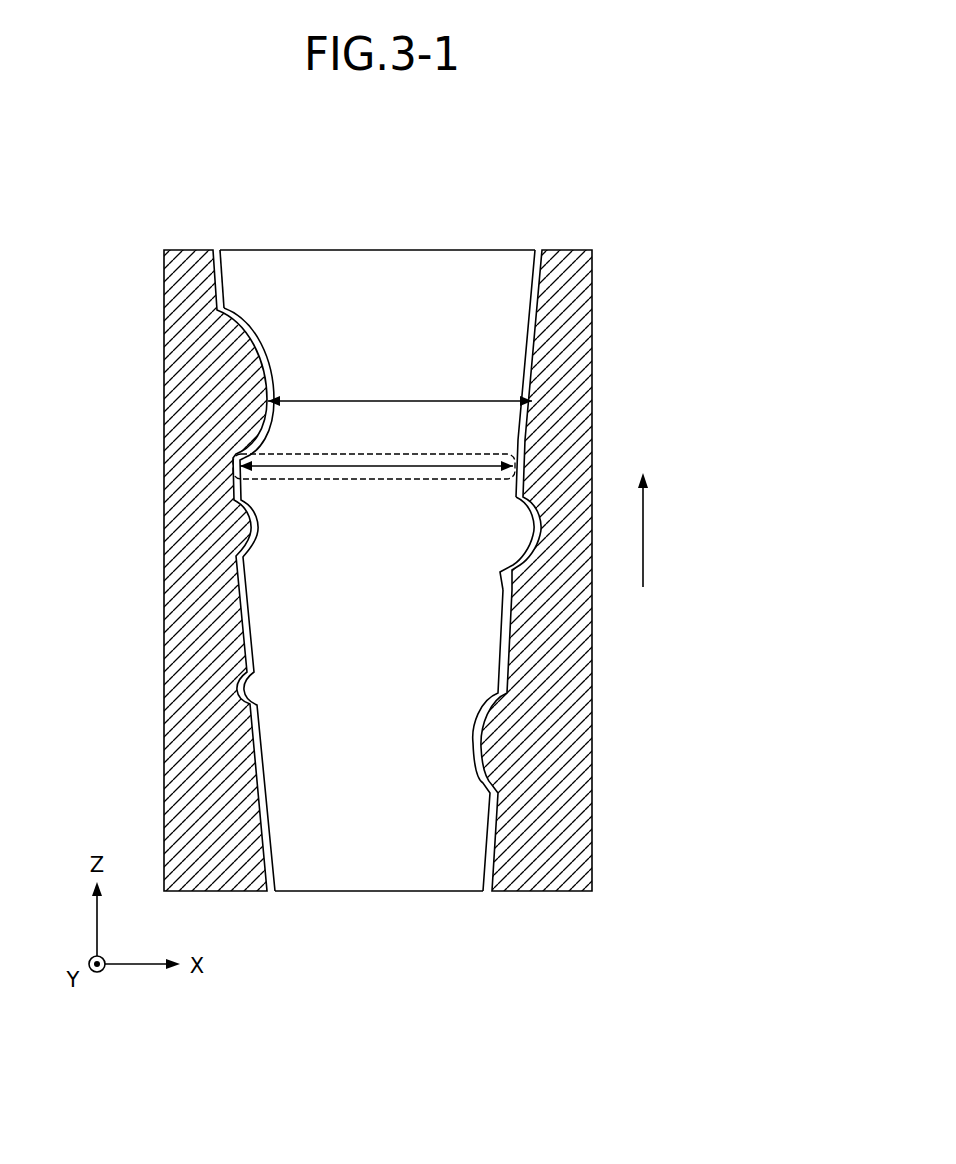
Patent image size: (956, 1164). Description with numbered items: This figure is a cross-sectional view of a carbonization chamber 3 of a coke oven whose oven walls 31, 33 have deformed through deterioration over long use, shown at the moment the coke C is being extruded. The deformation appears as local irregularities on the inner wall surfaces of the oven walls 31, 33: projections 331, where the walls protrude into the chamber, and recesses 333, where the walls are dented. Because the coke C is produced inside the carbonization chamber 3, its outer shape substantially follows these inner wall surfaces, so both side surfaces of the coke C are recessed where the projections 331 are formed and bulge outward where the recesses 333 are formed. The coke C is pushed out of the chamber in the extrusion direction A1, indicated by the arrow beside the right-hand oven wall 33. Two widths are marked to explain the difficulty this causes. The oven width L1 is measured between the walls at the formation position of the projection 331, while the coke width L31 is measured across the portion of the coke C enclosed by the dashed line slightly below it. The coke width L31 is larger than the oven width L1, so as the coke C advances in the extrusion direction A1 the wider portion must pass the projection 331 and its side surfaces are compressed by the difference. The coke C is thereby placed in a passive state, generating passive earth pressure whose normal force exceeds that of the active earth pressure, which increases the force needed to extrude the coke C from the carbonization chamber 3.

The carbonization chamber 3 is at (602, 192).
The oven wall 31 is at (187, 712).
The oven wall 33 is at (575, 732).
The projection 331 is at (250, 370).
The recess 333 is at (527, 578).
The coke C is at (483, 337).
The oven width L1 is at (381, 399).
The coke width L31 is at (397, 470).
The extrusion direction A1 is at (645, 536).